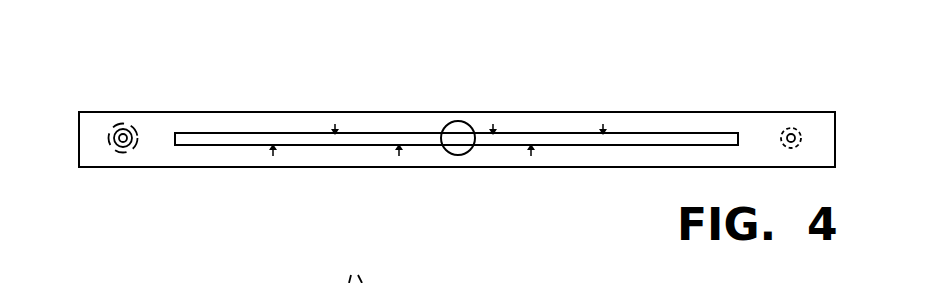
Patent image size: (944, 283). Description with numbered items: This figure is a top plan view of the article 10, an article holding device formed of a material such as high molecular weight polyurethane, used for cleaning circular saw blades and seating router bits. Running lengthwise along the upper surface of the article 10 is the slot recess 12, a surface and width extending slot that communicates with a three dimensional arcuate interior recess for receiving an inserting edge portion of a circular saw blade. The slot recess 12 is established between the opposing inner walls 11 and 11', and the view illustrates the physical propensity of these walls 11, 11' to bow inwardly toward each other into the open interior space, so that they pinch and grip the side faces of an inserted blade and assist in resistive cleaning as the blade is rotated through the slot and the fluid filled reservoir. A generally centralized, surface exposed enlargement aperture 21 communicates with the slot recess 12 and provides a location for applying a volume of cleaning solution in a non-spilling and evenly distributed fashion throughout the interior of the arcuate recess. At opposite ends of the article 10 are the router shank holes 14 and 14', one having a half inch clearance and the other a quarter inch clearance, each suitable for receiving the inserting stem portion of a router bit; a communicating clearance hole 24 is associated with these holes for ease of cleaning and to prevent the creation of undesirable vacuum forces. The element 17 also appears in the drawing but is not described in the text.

The article 10 is at (178, 214).
The inner wall 11 is at (469, 85).
The inner wall 11' is at (434, 182).
The slot recess 12 is at (236, 134).
The router shank hole 14 is at (747, 95).
The router shank hole 14' is at (91, 93).
The lower element 17 is at (360, 267).
The enlargement aperture 21 is at (447, 120).
The clearance hole 24 is at (797, 137).